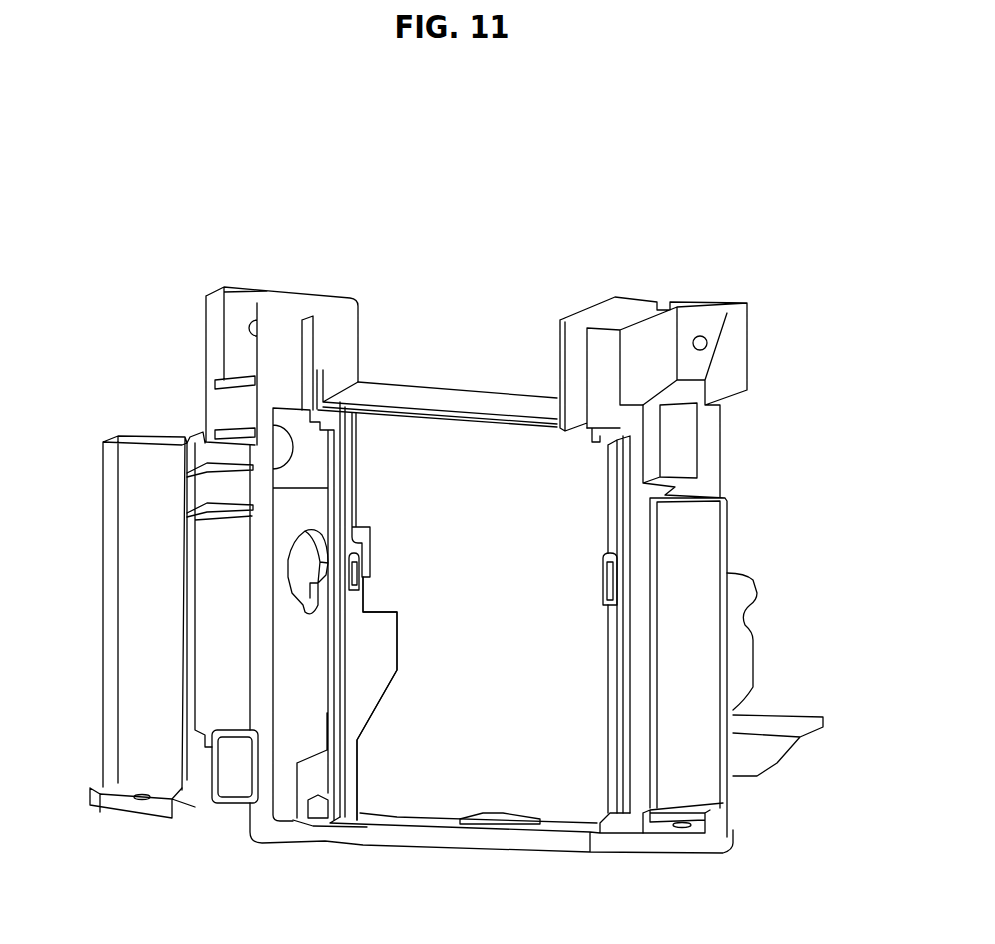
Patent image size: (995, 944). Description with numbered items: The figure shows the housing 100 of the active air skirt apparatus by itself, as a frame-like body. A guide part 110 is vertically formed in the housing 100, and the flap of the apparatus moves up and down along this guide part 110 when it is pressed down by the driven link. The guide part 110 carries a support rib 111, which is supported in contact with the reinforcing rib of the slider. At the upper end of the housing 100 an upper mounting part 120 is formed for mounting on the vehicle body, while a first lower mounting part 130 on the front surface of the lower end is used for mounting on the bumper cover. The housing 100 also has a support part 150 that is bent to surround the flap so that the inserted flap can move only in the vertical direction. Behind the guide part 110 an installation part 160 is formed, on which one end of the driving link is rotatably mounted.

The housing 100 is at (745, 478).
The guide part 110 is at (277, 423).
The support rib 111 is at (612, 519).
The upper mounting part 120 is at (238, 298).
The first lower mounting part 130 is at (122, 800).
The support part 150 is at (140, 578).
The installation part 160 is at (377, 680).